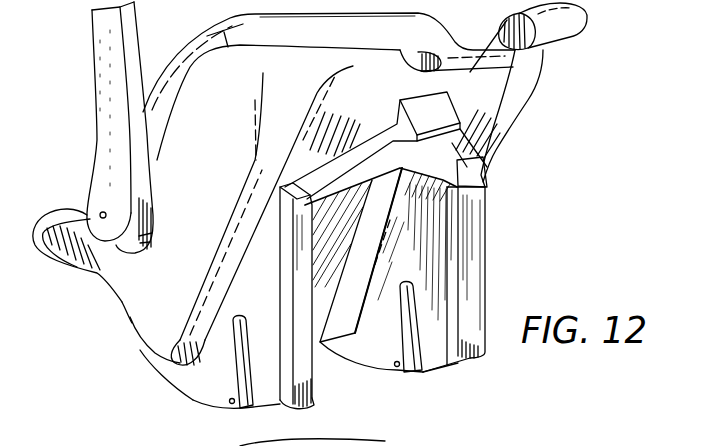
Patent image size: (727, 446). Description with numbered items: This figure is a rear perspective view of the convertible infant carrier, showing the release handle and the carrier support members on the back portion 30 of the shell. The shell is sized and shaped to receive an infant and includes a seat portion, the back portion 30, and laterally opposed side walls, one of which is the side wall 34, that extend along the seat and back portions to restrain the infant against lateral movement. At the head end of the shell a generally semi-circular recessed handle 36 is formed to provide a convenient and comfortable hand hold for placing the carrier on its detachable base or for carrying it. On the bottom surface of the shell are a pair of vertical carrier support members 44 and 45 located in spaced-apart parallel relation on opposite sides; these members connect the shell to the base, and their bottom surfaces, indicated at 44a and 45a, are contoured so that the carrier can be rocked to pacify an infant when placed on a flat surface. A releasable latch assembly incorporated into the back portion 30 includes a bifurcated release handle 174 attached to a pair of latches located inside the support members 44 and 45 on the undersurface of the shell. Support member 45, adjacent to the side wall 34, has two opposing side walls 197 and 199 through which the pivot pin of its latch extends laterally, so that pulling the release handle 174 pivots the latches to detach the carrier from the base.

The back portion 30 is at (503, 110).
The second side wall 34 is at (150, 283).
The recessed handle 36 is at (493, 70).
The carrier support member 44 is at (487, 276).
The leg base 44a is at (455, 366).
The carrier support member 45 is at (213, 368).
The brace end 45a is at (182, 390).
The release handle 174 is at (477, 150).
The side wall of support member 197 is at (320, 372).
The side wall of support member 199 is at (222, 405).